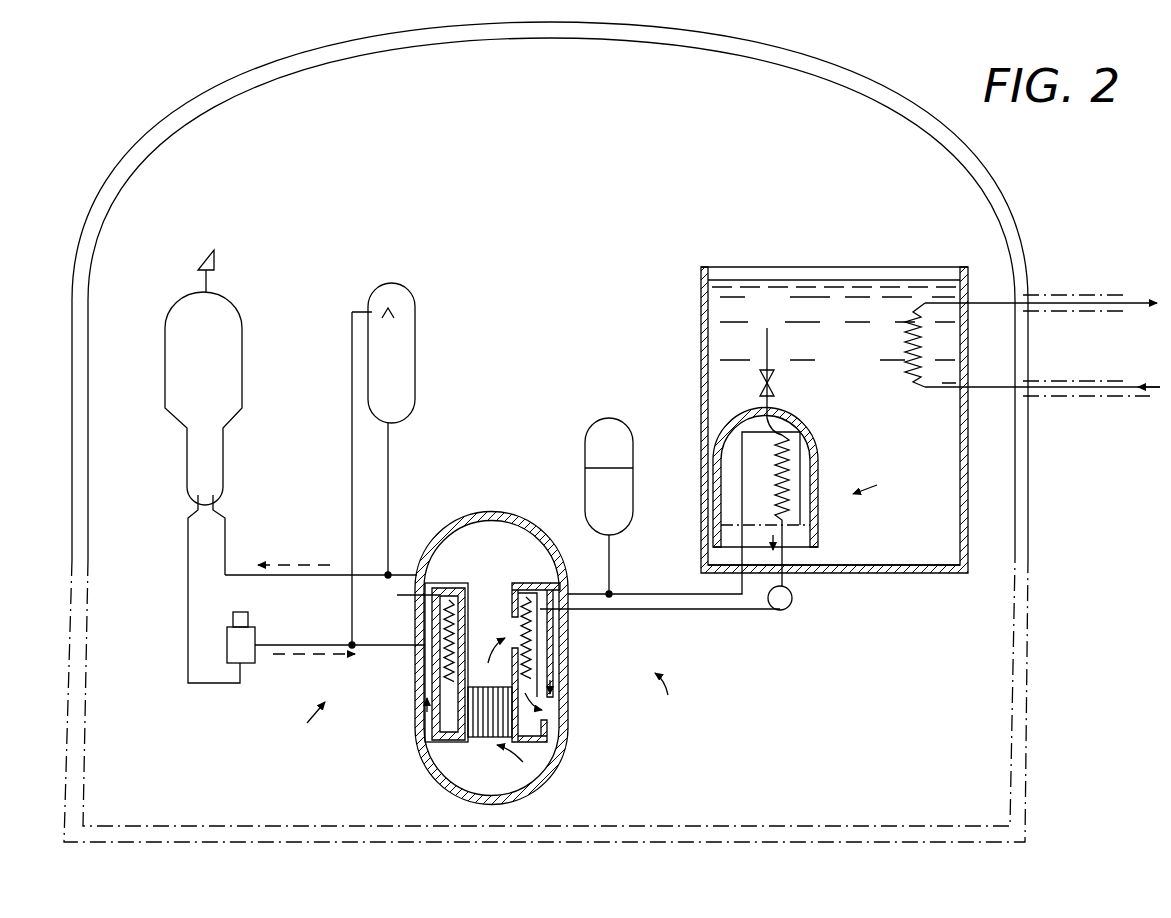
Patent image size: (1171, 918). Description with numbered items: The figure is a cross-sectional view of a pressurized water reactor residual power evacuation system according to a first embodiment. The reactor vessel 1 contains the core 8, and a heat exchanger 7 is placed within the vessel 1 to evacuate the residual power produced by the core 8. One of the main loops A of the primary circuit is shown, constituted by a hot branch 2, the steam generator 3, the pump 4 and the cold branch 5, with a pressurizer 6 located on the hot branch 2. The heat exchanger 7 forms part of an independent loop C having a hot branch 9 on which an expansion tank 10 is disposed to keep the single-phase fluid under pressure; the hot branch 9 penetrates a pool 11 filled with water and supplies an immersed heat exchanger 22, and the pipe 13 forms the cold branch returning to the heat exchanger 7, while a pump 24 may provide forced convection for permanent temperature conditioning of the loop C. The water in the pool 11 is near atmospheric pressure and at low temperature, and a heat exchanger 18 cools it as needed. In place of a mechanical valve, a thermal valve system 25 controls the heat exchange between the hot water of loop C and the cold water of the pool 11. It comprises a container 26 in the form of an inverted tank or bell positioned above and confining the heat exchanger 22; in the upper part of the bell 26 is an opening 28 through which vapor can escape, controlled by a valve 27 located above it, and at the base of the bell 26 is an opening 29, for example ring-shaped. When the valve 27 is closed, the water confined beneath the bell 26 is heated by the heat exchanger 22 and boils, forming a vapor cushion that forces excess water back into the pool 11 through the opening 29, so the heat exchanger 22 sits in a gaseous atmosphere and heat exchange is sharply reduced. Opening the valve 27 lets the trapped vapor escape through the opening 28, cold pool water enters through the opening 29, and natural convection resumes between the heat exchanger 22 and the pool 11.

The vessel 1 is at (540, 533).
The hot branch 2 is at (337, 575).
The steam generator 3 is at (170, 329).
The pump 4 is at (253, 665).
The cold branch 5 is at (395, 648).
The pressurizer 6 is at (406, 311).
The heat exchanger 7 is at (527, 657).
The core 8 is at (477, 737).
The hot branch 9 is at (579, 592).
The expansion tank 10 is at (627, 427).
The pool 11 is at (702, 318).
The pipe 13 is at (783, 556).
The heat exchanger 18 is at (908, 345).
The heat exchanger 22 is at (778, 468).
The pump 24 is at (792, 600).
The thermal valve system 25 is at (881, 477).
The container 26 is at (818, 478).
The valve 27 is at (775, 380).
The opening 28 is at (790, 428).
The opening 29 is at (715, 557).
The main loop A is at (308, 728).
The loop C is at (663, 699).